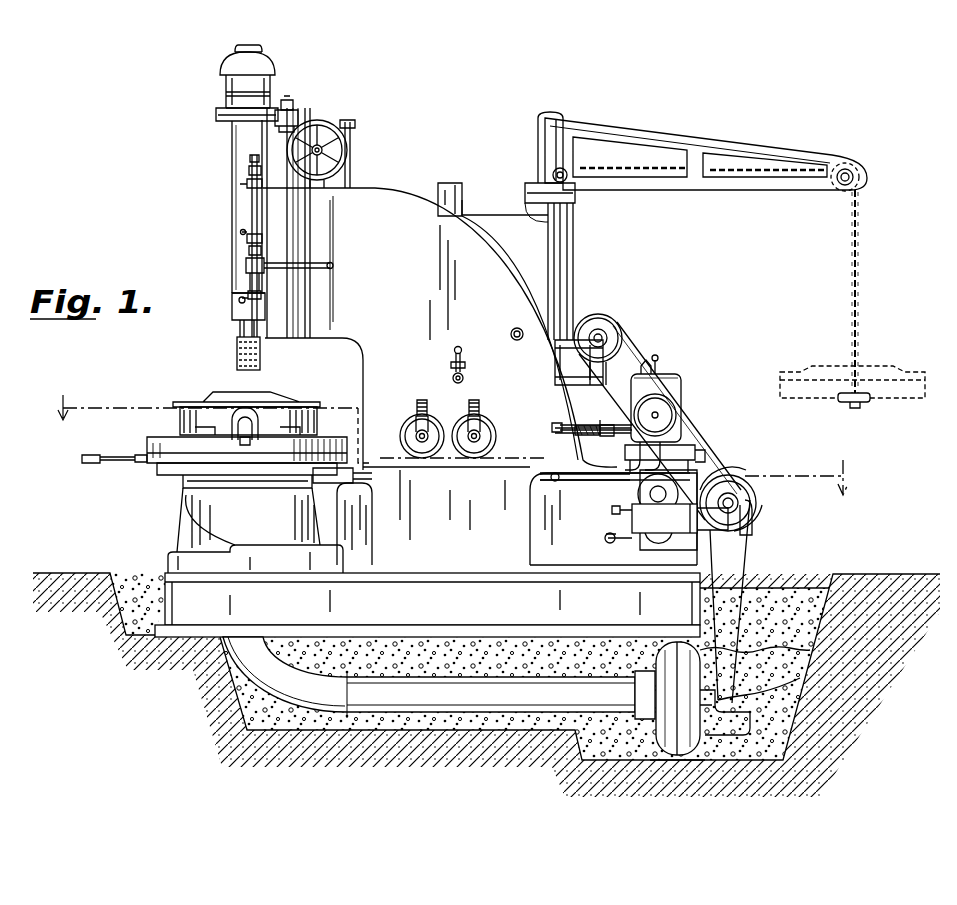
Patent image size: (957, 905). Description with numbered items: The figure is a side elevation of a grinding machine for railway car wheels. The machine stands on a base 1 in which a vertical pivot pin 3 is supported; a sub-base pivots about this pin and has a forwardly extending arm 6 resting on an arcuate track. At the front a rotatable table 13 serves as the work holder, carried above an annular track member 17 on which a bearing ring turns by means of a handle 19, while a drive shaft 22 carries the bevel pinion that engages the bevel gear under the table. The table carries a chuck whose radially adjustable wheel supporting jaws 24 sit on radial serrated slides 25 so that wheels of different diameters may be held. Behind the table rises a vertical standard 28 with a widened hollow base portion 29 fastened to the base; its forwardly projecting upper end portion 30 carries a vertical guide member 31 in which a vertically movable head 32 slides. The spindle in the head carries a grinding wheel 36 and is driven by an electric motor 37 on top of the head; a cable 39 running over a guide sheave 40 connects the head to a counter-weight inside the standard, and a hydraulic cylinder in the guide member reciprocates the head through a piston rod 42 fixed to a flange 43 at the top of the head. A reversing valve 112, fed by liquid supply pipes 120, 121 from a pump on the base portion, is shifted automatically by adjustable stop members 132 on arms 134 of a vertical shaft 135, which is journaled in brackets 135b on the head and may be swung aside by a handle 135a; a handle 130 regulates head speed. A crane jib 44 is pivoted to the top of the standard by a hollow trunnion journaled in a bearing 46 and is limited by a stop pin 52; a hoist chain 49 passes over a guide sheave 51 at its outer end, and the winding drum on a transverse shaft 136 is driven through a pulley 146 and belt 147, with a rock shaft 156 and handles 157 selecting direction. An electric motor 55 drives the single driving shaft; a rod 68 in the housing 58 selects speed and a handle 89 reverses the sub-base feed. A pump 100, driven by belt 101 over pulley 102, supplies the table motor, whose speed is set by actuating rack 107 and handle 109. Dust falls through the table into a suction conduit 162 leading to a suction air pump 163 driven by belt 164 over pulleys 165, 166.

The base 1 is at (478, 604).
The vertical pivot pin 3 is at (453, 433).
The forwardly extending arm 6 is at (200, 560).
The table 13 is at (147, 443).
The annular track member 17 is at (160, 475).
The handle 19 is at (88, 464).
The drive shaft 22 is at (372, 486).
The wheel supporting jaws 24 is at (180, 418).
The radial serrated slides 25 is at (240, 440).
The vertical standard 28 is at (392, 380).
The widened hollow base portion 29 is at (540, 553).
The forwardly projecting upper end portion 30 is at (335, 332).
The vertical guide member 31 is at (298, 342).
The vertically movable head 32 is at (233, 310).
The grinding wheel 36 is at (237, 360).
The electric motor 37 is at (222, 62).
The cable 39 is at (352, 176).
The guide sheave 40 is at (348, 150).
The piston rod 42 is at (290, 108).
The flange 43 is at (300, 117).
The jib 44 is at (668, 142).
The bearing 46 is at (576, 200).
The hoist chain 49 is at (858, 270).
The guide sheave 51 is at (858, 169).
The stop pin 52 is at (455, 182).
The electric motor 55 is at (743, 480).
The housing 58 is at (692, 521).
The rod 68 is at (622, 512).
The handle 89 is at (585, 481).
The pump 100 is at (681, 388).
The belt 101 is at (696, 452).
The pulley 102 is at (676, 413).
The actuating rack 107 is at (600, 428).
The handle 109 is at (482, 420).
The reversing valve 112 is at (246, 268).
The liquid supply pipe 120 is at (322, 262).
The liquid supply pipe 121 is at (312, 278).
The handle 130 is at (418, 420).
The adjustable stop members 132 is at (240, 185).
The arms 134 is at (250, 172).
The vertical shaft 135 is at (254, 220).
The handle 135a is at (234, 326).
The brackets 135b is at (251, 157).
The transverse shaft 136 is at (513, 328).
The pulley 146 is at (607, 326).
The belt 147 is at (643, 364).
The rock shaft 156 is at (464, 378).
The handles 157 is at (455, 349).
The suction conduit 162 is at (450, 697).
The suction air pump 163 is at (670, 644).
The belt 164 is at (810, 650).
The pulley 165 is at (805, 677).
The pulley 166 is at (758, 505).